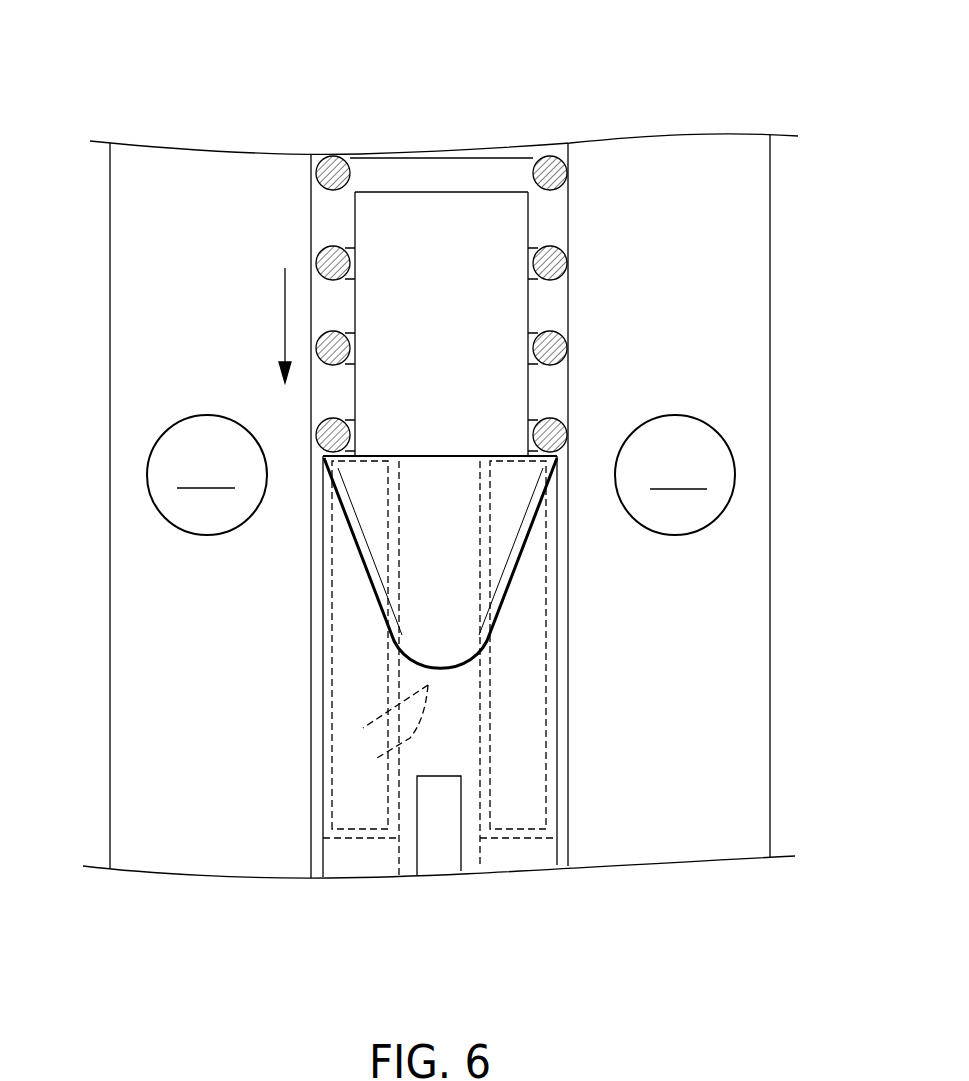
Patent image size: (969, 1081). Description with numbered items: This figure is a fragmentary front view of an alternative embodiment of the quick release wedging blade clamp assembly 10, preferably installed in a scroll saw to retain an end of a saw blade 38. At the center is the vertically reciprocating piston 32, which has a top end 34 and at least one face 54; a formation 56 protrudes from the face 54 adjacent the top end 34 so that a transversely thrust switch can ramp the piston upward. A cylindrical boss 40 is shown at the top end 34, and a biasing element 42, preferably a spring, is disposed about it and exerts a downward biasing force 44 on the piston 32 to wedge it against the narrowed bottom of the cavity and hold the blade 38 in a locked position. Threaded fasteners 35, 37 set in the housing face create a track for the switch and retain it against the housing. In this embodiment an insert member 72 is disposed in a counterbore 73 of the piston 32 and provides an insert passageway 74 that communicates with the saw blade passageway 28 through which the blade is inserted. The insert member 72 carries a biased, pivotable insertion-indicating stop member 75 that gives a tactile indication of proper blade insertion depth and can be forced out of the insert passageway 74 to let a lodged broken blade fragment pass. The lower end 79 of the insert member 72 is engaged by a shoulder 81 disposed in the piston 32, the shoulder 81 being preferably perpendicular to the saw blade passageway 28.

The wedging blade clamp assembly 10 is at (727, 88).
The saw blade passageway 28 is at (468, 860).
The piston 32 is at (523, 700).
The top end of the piston 34 is at (375, 450).
The threaded fastener 35 is at (207, 475).
The threaded fastener 37 is at (675, 475).
The saw blade 38 is at (442, 848).
The cylindrical boss 40 is at (488, 313).
The biasing element 42 is at (568, 178).
The downward biasing force 44 is at (285, 319).
The face of the piston 54 is at (537, 548).
The formation 56 is at (527, 488).
The insert member 72 is at (350, 615).
The counterbore 73 is at (530, 613).
The insert passageway 74 is at (393, 670).
The insertion-indicating stop member 75 is at (388, 732).
The lower end of the insert member 79 is at (353, 830).
The shoulder 81 is at (518, 840).